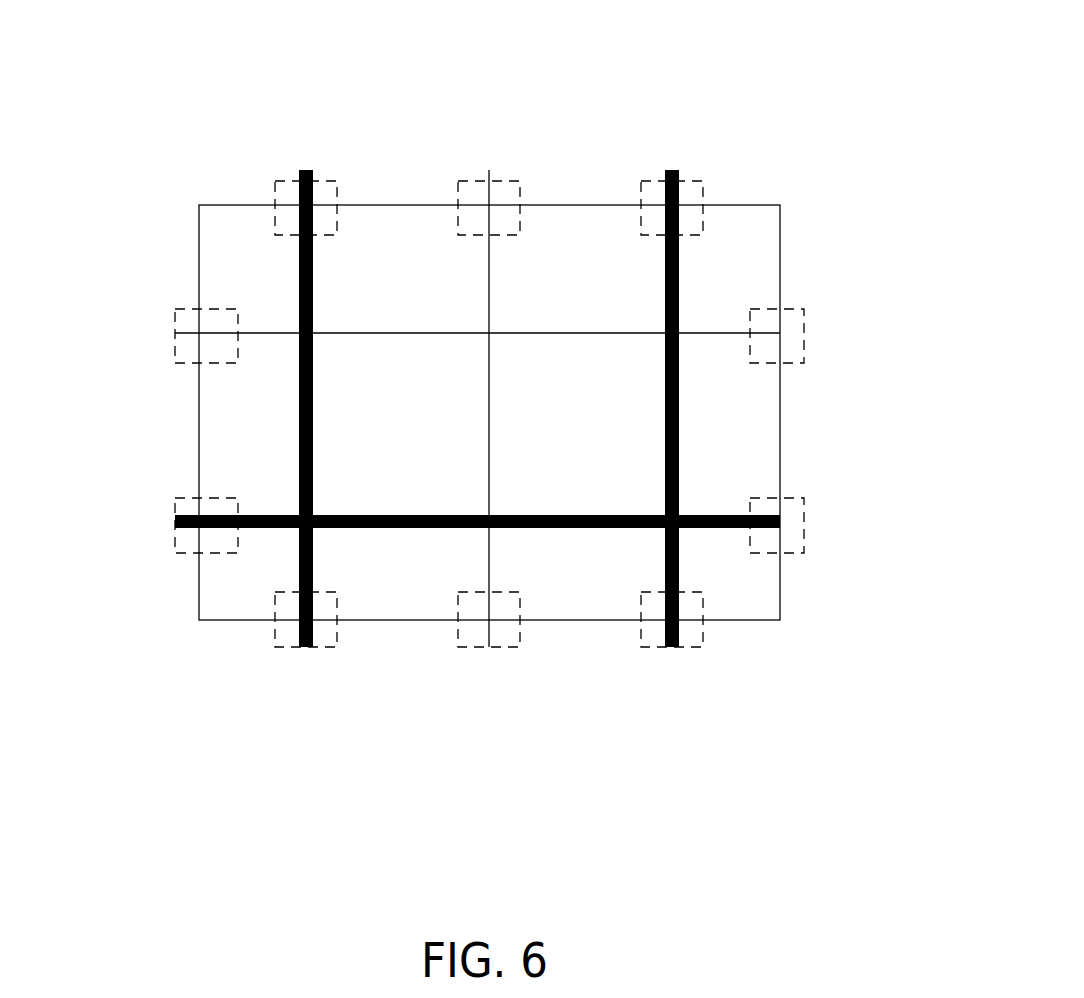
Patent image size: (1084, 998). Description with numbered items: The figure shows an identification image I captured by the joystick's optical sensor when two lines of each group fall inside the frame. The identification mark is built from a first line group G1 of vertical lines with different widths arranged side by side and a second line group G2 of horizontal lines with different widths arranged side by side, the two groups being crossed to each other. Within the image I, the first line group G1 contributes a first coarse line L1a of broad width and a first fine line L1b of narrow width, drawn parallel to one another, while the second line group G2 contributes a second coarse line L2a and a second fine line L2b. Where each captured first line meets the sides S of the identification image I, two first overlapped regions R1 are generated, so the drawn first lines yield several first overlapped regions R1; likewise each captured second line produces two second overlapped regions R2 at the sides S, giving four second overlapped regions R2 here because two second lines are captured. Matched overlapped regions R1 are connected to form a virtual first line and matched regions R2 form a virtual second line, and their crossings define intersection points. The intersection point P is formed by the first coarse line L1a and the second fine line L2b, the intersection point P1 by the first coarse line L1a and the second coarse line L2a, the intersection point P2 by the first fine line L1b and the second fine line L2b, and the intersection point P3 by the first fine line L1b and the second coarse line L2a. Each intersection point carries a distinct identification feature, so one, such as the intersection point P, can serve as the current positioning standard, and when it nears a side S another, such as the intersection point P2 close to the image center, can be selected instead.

The side of the identification image S is at (199, 388).
The first line group G1 is at (491, 329).
The first coarse line L1a is at (307, 170).
The first fine line L1b is at (489, 170).
The second line group G2 is at (561, 469).
The second coarse line L2a is at (725, 528).
The second fine line L2b is at (725, 335).
The first overlapped region R1 is at (342, 150).
The second overlapped region R2 is at (145, 320).
The intersection point P is at (313, 320).
The intersection point P1 is at (313, 508).
The intersection point P2 is at (489, 320).
The intersection point P3 is at (489, 508).
The identification image I is at (438, 681).